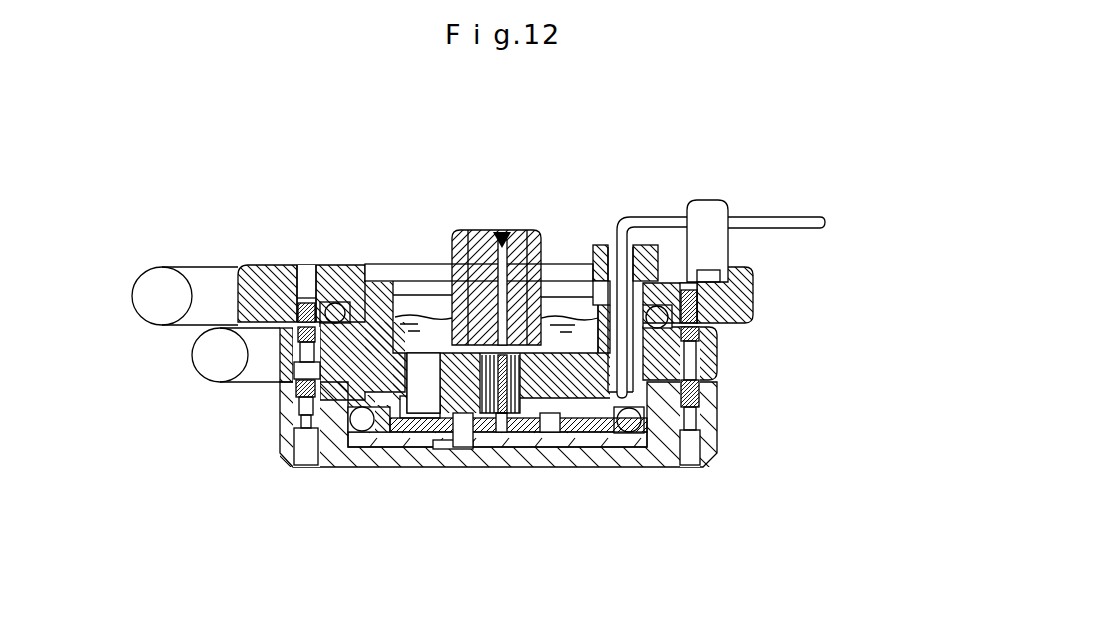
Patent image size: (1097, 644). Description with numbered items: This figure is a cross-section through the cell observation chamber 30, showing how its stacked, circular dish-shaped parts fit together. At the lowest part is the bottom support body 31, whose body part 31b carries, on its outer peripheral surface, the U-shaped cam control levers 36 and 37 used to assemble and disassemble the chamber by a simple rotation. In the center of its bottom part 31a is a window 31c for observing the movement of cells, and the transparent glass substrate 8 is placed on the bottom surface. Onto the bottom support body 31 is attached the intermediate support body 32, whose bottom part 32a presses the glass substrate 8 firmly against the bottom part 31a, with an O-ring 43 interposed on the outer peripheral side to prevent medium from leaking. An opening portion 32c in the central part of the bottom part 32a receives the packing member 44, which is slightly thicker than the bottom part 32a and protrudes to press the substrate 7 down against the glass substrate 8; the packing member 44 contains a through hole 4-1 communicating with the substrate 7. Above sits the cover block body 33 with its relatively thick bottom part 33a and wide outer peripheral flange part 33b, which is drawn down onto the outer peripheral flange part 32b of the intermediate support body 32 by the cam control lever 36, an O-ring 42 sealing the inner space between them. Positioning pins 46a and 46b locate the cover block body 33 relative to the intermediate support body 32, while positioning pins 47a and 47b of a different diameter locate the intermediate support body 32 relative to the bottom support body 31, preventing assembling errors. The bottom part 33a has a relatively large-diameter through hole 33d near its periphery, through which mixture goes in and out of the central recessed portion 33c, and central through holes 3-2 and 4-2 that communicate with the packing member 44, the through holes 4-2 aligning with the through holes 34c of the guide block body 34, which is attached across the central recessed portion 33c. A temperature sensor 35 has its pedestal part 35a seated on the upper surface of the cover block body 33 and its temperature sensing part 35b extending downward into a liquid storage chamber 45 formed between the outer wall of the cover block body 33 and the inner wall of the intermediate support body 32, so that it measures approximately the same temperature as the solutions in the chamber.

The cell observation chamber 30 is at (488, 346).
The bottom support body 31 is at (520, 470).
The bottom part of the bottom support body 31a is at (647, 466).
The body part of the bottom support body 31b is at (286, 455).
The window 31c is at (485, 449).
The intermediate support body 32 is at (527, 417).
The bottom part of the intermediate support body 32a is at (614, 440).
The outer peripheral flange part of the intermediate support body 32b is at (348, 430).
The opening portion 32c is at (435, 449).
The cover block body 33 is at (538, 298).
The bottom part of the cover block body 33a is at (447, 266).
The outer peripheral flange part of the cover block body 33b is at (293, 263).
The central recessed portion 33c is at (570, 310).
The through hole 33d is at (421, 375).
The guide block body 34 is at (495, 248).
The through holes of the guide block body 34c is at (503, 233).
The temperature sensor 35 is at (701, 317).
The pedestal part 35a is at (604, 247).
The temperature sensing part 35b is at (655, 437).
The cam control lever 36 is at (197, 278).
The cam control lever 37 is at (258, 368).
The O-ring 42 is at (313, 266).
The O-ring 43 is at (368, 432).
The packing member 44 is at (592, 432).
The liquid storage chamber 45 is at (670, 345).
The positioning pin 46a is at (270, 283).
The positioning pin 46b is at (705, 322).
The positioning pin 47a is at (296, 382).
The positioning pin 47b is at (698, 397).
The substrate 7 is at (470, 430).
The transparent glass substrate 8 is at (395, 447).
The through hole 4-1 is at (465, 447).
The through hole 4-2 is at (499, 432).
The through hole 3-2 is at (560, 427).